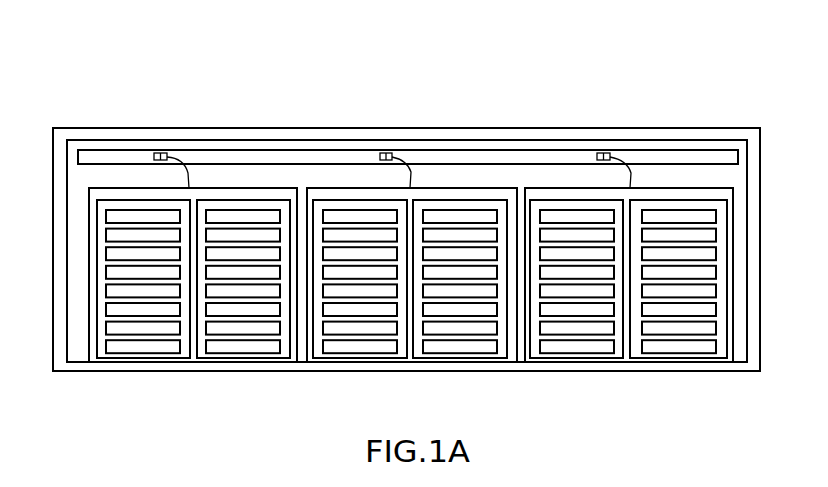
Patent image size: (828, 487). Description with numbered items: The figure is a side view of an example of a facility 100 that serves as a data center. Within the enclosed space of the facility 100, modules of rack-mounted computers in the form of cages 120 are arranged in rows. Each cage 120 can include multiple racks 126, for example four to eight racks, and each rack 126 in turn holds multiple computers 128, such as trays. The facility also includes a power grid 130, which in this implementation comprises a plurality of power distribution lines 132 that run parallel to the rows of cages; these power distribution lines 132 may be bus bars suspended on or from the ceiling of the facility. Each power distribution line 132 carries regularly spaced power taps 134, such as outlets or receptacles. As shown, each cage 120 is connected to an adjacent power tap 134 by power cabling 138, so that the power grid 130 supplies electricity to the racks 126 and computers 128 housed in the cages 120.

The facility 100 is at (310, 107).
The cage 120 is at (300, 303).
The rack 126 is at (92, 321).
The computer 128 is at (143, 318).
The power grid 130 is at (700, 148).
The power distribution line 132 is at (552, 150).
The power tap 134 is at (158, 152).
The power cabling 138 is at (189, 172).